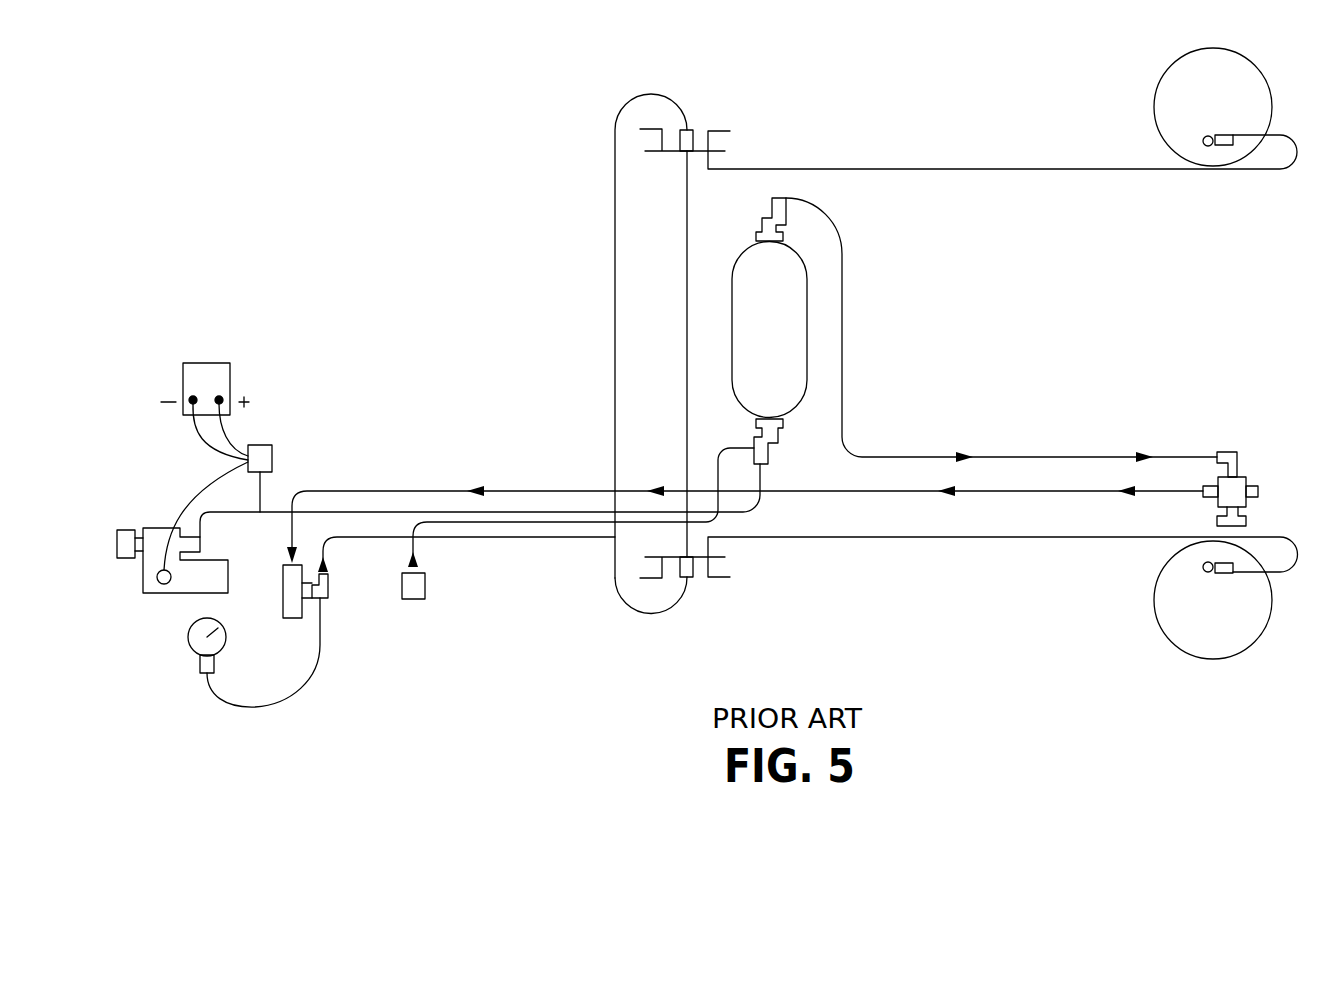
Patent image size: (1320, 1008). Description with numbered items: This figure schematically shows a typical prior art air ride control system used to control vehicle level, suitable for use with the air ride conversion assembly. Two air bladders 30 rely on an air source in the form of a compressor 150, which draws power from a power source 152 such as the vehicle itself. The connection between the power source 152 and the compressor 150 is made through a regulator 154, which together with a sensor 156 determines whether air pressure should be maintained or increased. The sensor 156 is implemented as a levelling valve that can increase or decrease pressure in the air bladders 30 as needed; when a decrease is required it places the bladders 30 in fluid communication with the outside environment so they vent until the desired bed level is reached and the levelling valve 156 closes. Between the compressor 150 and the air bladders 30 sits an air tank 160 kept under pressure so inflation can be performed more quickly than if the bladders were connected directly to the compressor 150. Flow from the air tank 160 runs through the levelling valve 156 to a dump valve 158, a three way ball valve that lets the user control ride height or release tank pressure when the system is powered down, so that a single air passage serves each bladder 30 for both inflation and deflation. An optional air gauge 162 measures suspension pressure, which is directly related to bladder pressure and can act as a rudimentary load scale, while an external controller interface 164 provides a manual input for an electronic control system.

The air bladders 30 is at (1229, 105).
The compressor 150 is at (180, 595).
The power source 152 is at (207, 363).
The regulator 154 is at (263, 445).
The sensor (levelling valve) 156 is at (1228, 452).
The dump valve 158 is at (328, 587).
The air tank 160 is at (790, 345).
The air gauge 162 is at (188, 634).
The external controller interface 164 is at (425, 585).